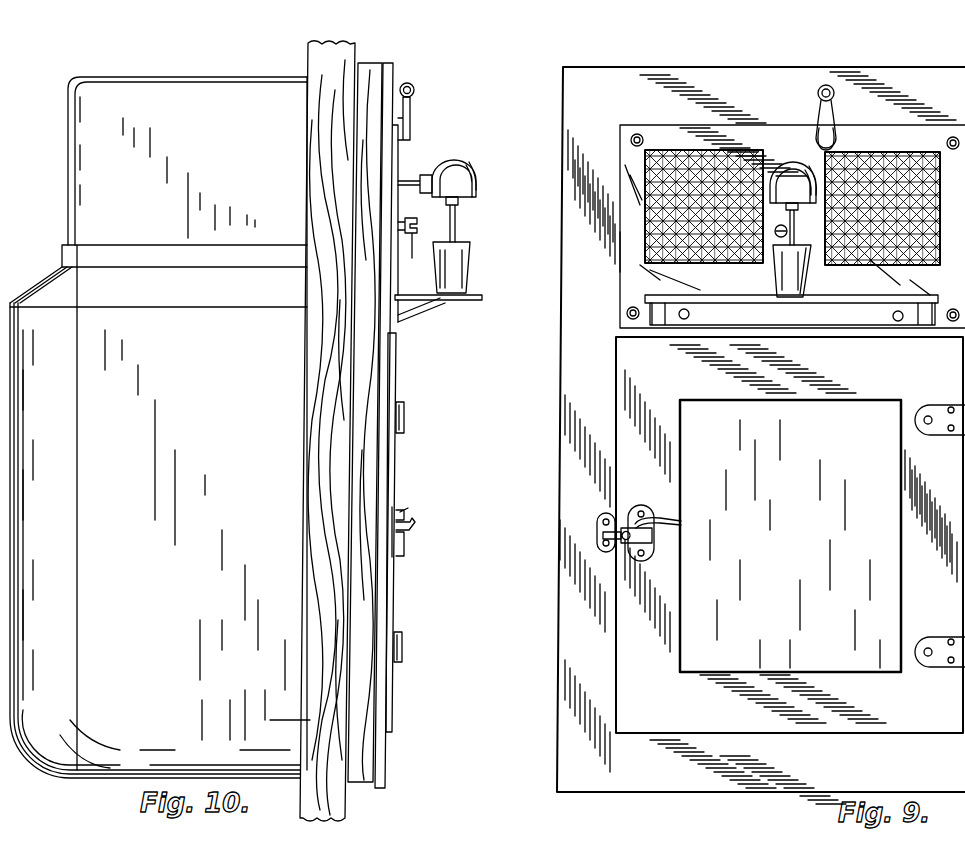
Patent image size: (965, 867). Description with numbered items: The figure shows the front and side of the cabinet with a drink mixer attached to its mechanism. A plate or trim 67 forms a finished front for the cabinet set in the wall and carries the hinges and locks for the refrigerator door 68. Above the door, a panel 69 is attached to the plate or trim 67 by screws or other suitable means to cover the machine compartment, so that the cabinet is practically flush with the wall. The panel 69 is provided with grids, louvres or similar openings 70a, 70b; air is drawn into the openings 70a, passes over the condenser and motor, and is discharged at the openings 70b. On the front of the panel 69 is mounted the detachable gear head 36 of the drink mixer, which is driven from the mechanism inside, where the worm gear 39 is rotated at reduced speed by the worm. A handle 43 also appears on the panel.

In FIG. 10, the detachable gear head 36 is at (472, 172).
In FIG. 9, the detachable gear head 36 is at (793, 229).
In FIG. 10, the worm gear 39 is at (421, 246).
In FIG. 10, the handle 43 is at (412, 108).
In FIG. 9, the handle 43 is at (826, 117).
In FIG. 9, the plate or trim 67 is at (566, 224).
In FIG. 10, the refrigerator door 68 is at (400, 480).
In FIG. 9, the refrigerator door 68 is at (640, 455).
In FIG. 10, the panel 69 is at (400, 168).
In FIG. 9, the panel 69 is at (640, 277).
In FIG. 9, the openings 70a is at (908, 165).
In FIG. 9, the openings 70b is at (650, 176).